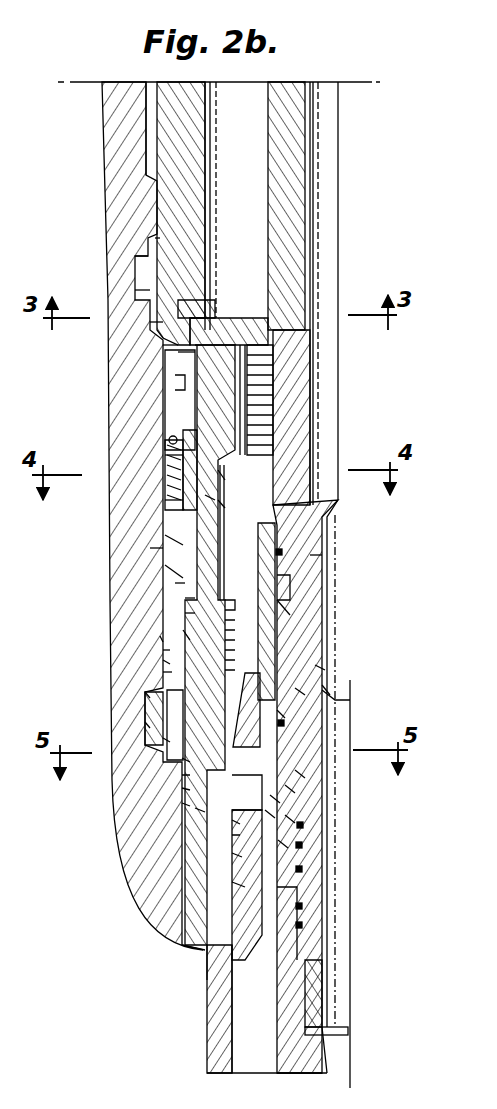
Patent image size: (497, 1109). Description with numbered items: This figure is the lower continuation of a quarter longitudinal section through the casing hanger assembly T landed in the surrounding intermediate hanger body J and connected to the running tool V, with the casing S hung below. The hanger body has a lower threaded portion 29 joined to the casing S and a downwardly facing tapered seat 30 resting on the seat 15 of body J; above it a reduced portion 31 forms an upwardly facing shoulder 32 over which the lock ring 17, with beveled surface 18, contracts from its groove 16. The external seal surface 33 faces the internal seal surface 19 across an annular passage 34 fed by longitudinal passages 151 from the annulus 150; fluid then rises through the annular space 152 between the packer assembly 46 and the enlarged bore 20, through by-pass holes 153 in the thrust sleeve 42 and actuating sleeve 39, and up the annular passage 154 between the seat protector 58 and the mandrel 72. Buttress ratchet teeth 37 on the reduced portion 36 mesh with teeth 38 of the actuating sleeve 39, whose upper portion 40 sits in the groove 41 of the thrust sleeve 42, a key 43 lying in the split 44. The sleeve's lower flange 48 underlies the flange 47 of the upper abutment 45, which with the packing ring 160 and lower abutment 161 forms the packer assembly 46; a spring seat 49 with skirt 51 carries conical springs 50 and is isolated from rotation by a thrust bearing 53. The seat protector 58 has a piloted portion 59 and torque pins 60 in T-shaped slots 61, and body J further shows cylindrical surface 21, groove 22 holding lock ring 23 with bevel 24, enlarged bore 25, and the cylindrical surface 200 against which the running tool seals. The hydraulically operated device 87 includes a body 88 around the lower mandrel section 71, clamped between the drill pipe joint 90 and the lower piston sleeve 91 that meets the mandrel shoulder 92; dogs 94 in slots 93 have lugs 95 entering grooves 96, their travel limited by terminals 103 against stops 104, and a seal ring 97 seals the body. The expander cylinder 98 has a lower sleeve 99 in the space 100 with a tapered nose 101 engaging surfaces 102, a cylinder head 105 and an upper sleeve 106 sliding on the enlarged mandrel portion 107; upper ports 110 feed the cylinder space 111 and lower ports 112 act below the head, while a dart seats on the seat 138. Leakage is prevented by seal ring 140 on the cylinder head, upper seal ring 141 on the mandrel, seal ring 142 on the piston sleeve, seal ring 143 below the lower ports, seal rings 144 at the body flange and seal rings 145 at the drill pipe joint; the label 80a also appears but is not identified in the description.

The intermediate hanger body J is at (105, 172).
The enlarged bore 25 is at (145, 121).
The seat protector 58 is at (190, 175).
The reduced diameter portion 59 is at (218, 282).
The radial torque pins 60 is at (200, 310).
The outwardly projecting upper portion 40 is at (222, 332).
The lower section of running tool mandrel 71 is at (295, 187).
The running tool mandrel 72 is at (313, 276).
The annular passage 154 is at (250, 127).
The seat 138 is at (332, 509).
The upwardly facing ratchet teeth 38 is at (200, 422).
The key 43 is at (250, 372).
The slot or split 44 is at (268, 420).
The upper cylinder sleeve 106 is at (266, 555).
The upper and lower terminals 103 is at (245, 745).
The seal ring 97 is at (236, 870).
The annulus 150 is at (212, 1018).
The lower threaded portion 29 is at (210, 970).
The casing S is at (227, 1058).
The drill pipe joint 90 is at (288, 1076).
The casing 80a is at (340, 892).
The lock ring 17 is at (160, 705).
The upper inner beveled surface 18 is at (172, 685).
The internal circumferential groove 41 is at (170, 404).
The lower flange 48 is at (165, 517).
The spring device 50 is at (165, 482).
The reduced external diameter portion 36 is at (222, 522).
The annular expander and retainer cylinder 98 is at (290, 645).
The upper inner beveled surface 24 is at (155, 240).
The internal circumferential groove 22 is at (140, 268).
The lock ring 23 is at (148, 292).
The inverted T-shaped slots 61 is at (160, 322).
The internal cylindrical surface 21 is at (175, 345).
The thrust sleeve 42 is at (190, 358).
The fluid by-pass holes 153 is at (175, 382).
The thrust bearing 53 is at (158, 445).
The spring seat 49 is at (160, 460).
The skirt 51 is at (175, 502).
The upper abutment 45 is at (165, 540).
The body 20 is at (150, 552).
The packer assembly 46 is at (165, 572).
The annular space 152 is at (180, 586).
The packing element ring 160 is at (190, 600).
The lower abutment 161 is at (193, 615).
The casing hanger assembly T is at (160, 640).
The external cylindrical seal surface 33 is at (185, 635).
The annular passage 34 is at (165, 650).
The running tool V is at (165, 662).
The internal seal surface 19 is at (167, 672).
The longitudinal fluid passages 151 is at (150, 695).
The reduced external diameter portion 31 is at (150, 725).
The internal circumferential ring groove 16 is at (165, 740).
The upwardly facing shoulder 32 is at (185, 760).
The upper and lower stop portions 104 is at (185, 775).
The outer tapered fingers 95 is at (183, 790).
The tapered seat 15 is at (183, 805).
The downwardly facing tapered seat 30 is at (200, 810).
The internal grooves 96 is at (235, 822).
The body 88 is at (240, 855).
The internal cylindrical surface 200 is at (243, 885).
The locking dogs 94 is at (247, 792).
The packer actuating sleeve 39 is at (222, 478).
The inwardly directed flange 47 is at (212, 497).
The downwardly facing ratchet teeth 37 is at (222, 505).
The upper seal ring 141 is at (300, 547).
The enlarged diameter portion 107 is at (318, 560).
The upper ports 110 is at (300, 583).
The annular cylinder space 111 is at (280, 602).
The seal ring 140 is at (322, 668).
The cylinder head 105 is at (300, 692).
The lower ports 112 is at (320, 690).
The downwardly facing mandrel shoulder 92 is at (282, 715).
The external seal ring 142 is at (283, 725).
The tapered surfaces 102 is at (300, 775).
The lower cylinder sleeve 99 is at (290, 790).
The hydraulically operated device 87 is at (275, 800).
The lower piston sleeve 91 is at (270, 815).
The slots 93 is at (290, 820).
The seal ring 143 is at (300, 825).
The tapered nose 101 is at (283, 845).
The annular space 100 is at (298, 845).
The seal rings 144 is at (298, 870).
The seal rings 145 is at (300, 925).